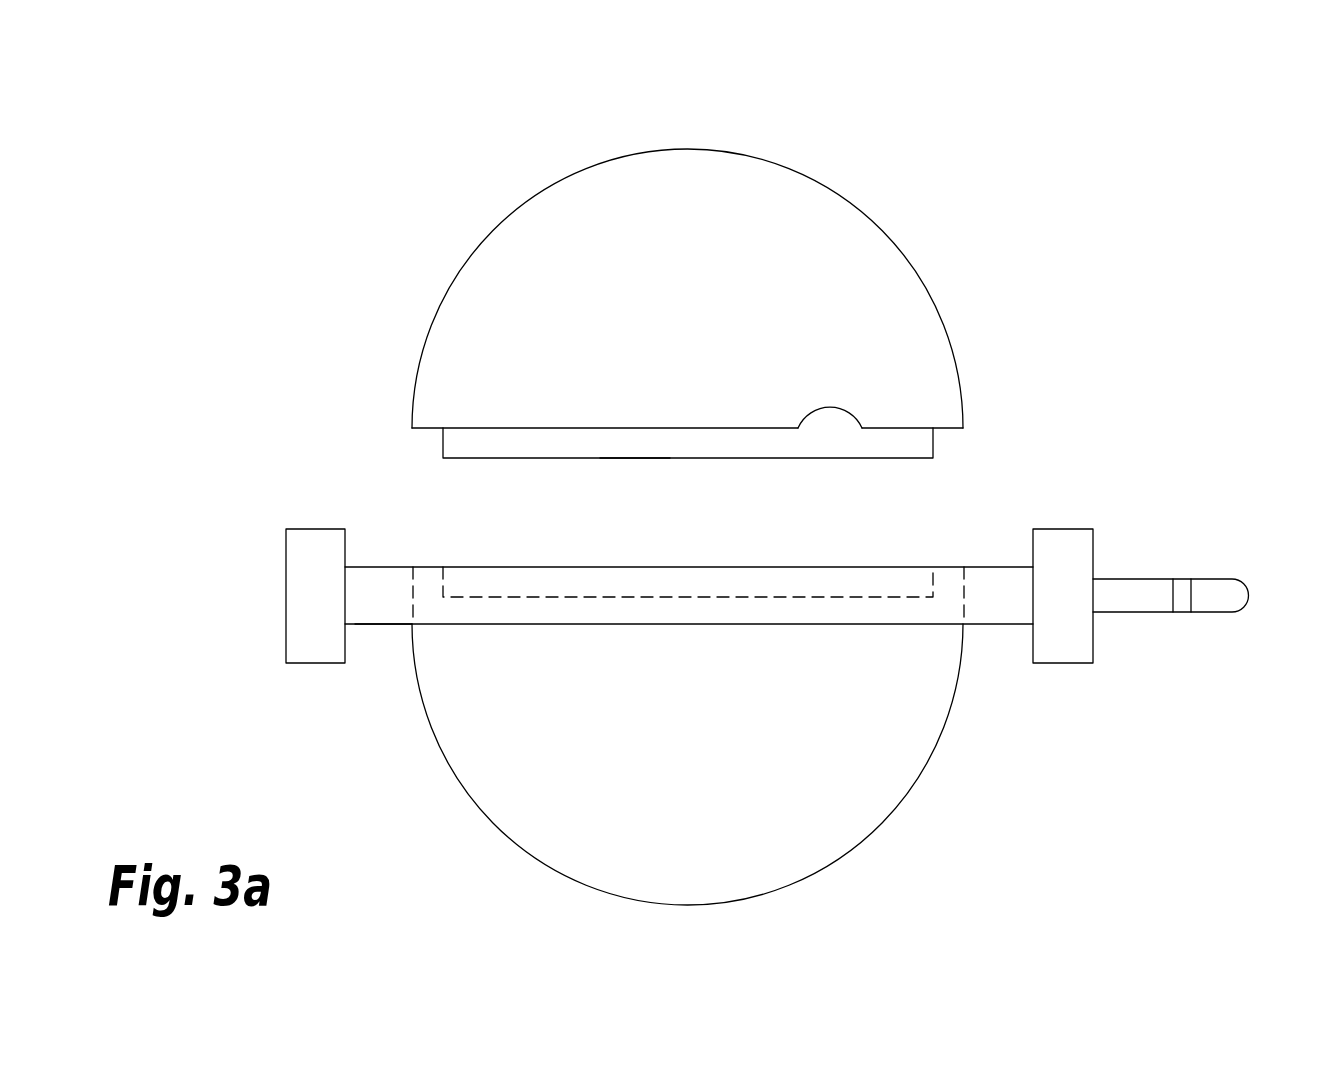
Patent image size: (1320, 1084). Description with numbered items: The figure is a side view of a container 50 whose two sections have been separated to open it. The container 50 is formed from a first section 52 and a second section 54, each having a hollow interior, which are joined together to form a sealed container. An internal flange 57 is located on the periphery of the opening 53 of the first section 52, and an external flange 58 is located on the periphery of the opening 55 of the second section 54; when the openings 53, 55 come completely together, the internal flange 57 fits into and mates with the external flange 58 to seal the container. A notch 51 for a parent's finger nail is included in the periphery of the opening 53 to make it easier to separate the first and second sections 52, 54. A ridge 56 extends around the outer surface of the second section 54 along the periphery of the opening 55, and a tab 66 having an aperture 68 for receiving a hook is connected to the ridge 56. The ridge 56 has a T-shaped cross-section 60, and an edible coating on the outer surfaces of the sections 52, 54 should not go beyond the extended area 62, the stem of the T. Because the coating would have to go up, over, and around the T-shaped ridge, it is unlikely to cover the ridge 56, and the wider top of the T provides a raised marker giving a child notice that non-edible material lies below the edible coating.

The container 50 is at (1192, 147).
The notch 51 is at (842, 408).
The first section 52 is at (804, 196).
The opening 53 is at (633, 457).
The second section 54 is at (805, 850).
The opening 55 is at (768, 567).
The ridge 56 is at (259, 610).
The internal flange 57 is at (457, 447).
The external flange 58 is at (432, 596).
The T-shaped cross-section 60 is at (395, 692).
The extended area 62 is at (407, 645).
The tab 66 is at (1220, 595).
The aperture 68 is at (1180, 590).